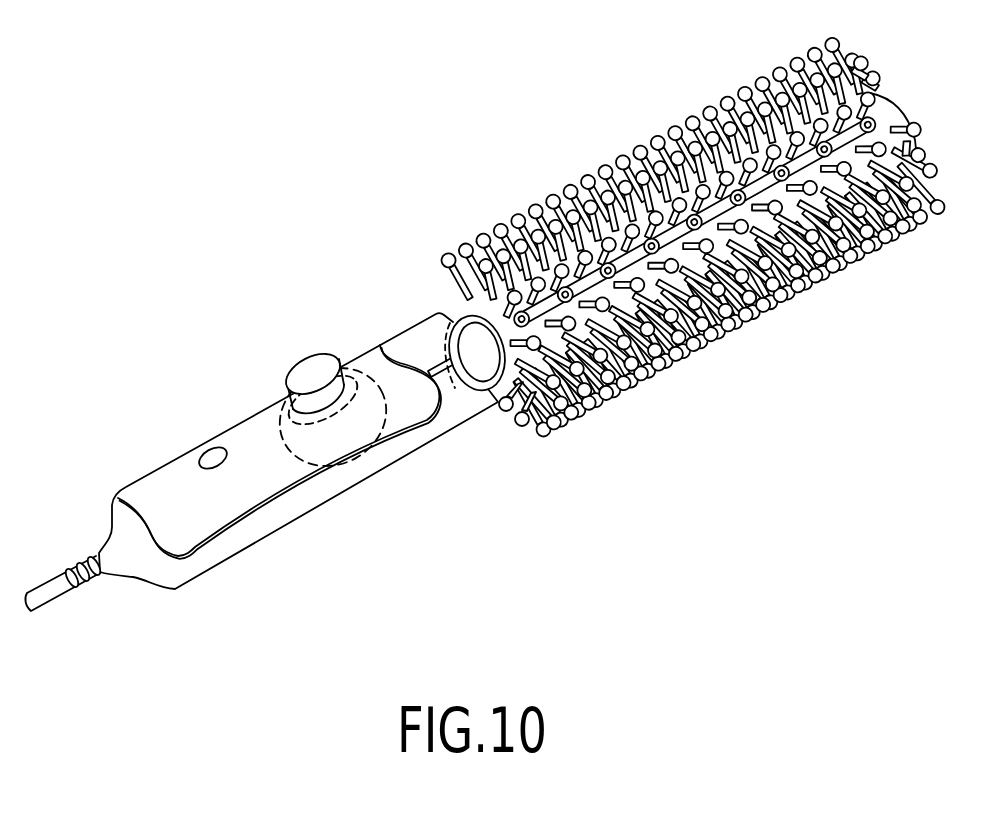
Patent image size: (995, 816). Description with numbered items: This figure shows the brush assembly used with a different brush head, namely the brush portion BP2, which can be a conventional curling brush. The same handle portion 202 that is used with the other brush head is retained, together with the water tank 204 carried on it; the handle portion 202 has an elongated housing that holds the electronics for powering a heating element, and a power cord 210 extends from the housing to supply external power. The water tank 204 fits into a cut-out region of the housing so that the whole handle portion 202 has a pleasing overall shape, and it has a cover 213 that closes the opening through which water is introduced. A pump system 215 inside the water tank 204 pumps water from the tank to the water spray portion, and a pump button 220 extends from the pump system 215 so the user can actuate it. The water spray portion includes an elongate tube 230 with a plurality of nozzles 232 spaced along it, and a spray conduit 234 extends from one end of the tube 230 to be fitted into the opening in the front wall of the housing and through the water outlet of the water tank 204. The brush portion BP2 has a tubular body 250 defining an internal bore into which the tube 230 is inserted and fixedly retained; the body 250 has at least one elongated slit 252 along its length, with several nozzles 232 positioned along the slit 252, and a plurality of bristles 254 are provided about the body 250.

The handle portion 202 is at (312, 512).
The water tank 204 is at (138, 480).
The power cord 210 is at (50, 596).
The cover 213 is at (209, 450).
The pump system 215 is at (290, 442).
The pump button 220 is at (304, 365).
The elongate tube 230 is at (553, 303).
The nozzles 232 is at (614, 262).
The spray conduit 234 is at (452, 388).
The tubular body 250 is at (622, 315).
The elongated slit 252 is at (800, 153).
The bristles 254 is at (477, 223).
The brush portion BP2 is at (666, 277).